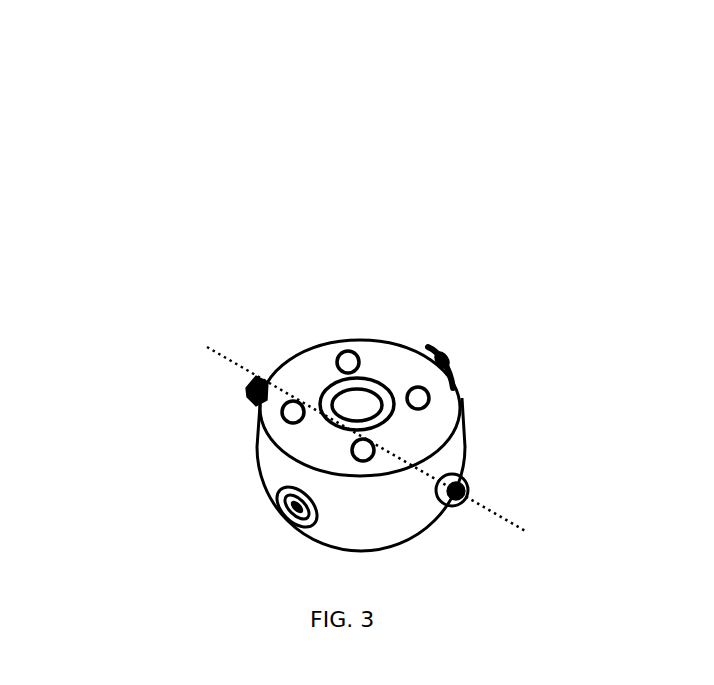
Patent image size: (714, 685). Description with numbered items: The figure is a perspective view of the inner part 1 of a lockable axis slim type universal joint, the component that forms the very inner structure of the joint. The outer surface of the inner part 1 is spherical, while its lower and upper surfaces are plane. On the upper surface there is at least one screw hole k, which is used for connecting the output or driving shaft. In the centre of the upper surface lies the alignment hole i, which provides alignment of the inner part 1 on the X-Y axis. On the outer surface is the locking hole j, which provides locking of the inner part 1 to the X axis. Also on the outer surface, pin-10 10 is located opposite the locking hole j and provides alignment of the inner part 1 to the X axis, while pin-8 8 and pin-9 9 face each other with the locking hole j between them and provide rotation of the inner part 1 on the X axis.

The inner part 1 is at (178, 132).
The pin- 8 is at (465, 484).
The pin- 9 is at (246, 390).
The pin- 10 is at (452, 360).
The alignment hole i is at (346, 396).
The locking hole j is at (276, 505).
The screw hole k is at (348, 352).